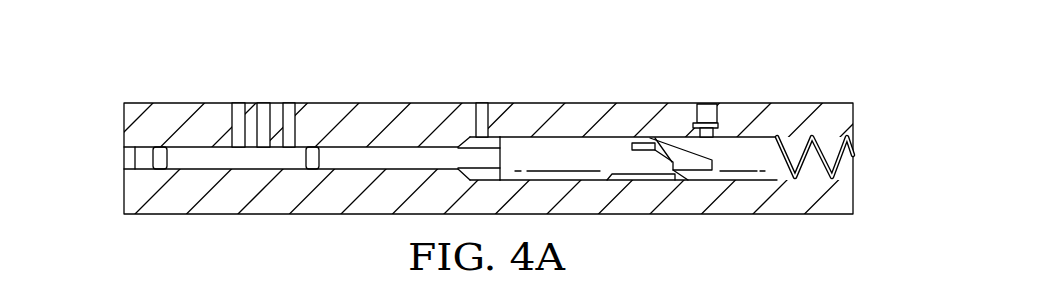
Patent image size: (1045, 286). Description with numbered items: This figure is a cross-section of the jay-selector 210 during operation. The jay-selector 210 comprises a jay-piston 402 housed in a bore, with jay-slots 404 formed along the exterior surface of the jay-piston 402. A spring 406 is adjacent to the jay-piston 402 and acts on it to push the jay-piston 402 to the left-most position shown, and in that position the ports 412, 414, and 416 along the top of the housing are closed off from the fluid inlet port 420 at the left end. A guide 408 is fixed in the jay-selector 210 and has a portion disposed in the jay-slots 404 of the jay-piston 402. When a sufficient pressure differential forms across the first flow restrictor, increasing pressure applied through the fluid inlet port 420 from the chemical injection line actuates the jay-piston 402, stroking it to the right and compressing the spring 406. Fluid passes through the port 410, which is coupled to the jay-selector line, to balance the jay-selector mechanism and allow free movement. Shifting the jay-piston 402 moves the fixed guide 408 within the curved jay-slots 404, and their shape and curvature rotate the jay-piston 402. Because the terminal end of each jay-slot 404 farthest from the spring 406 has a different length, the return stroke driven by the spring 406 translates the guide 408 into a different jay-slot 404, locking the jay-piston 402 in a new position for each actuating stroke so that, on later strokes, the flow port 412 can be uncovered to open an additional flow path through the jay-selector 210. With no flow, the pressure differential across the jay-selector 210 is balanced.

The jay-selector 210 is at (797, 62).
The jay-piston 402 is at (553, 147).
The jay-slots 404 is at (658, 142).
The spring 406 is at (845, 165).
The guide 408 is at (704, 110).
The port 410 is at (483, 110).
The flow port 412 is at (236, 108).
The port 414 is at (263, 108).
The port 416 is at (288, 108).
The fluid inlet port 420 is at (130, 157).